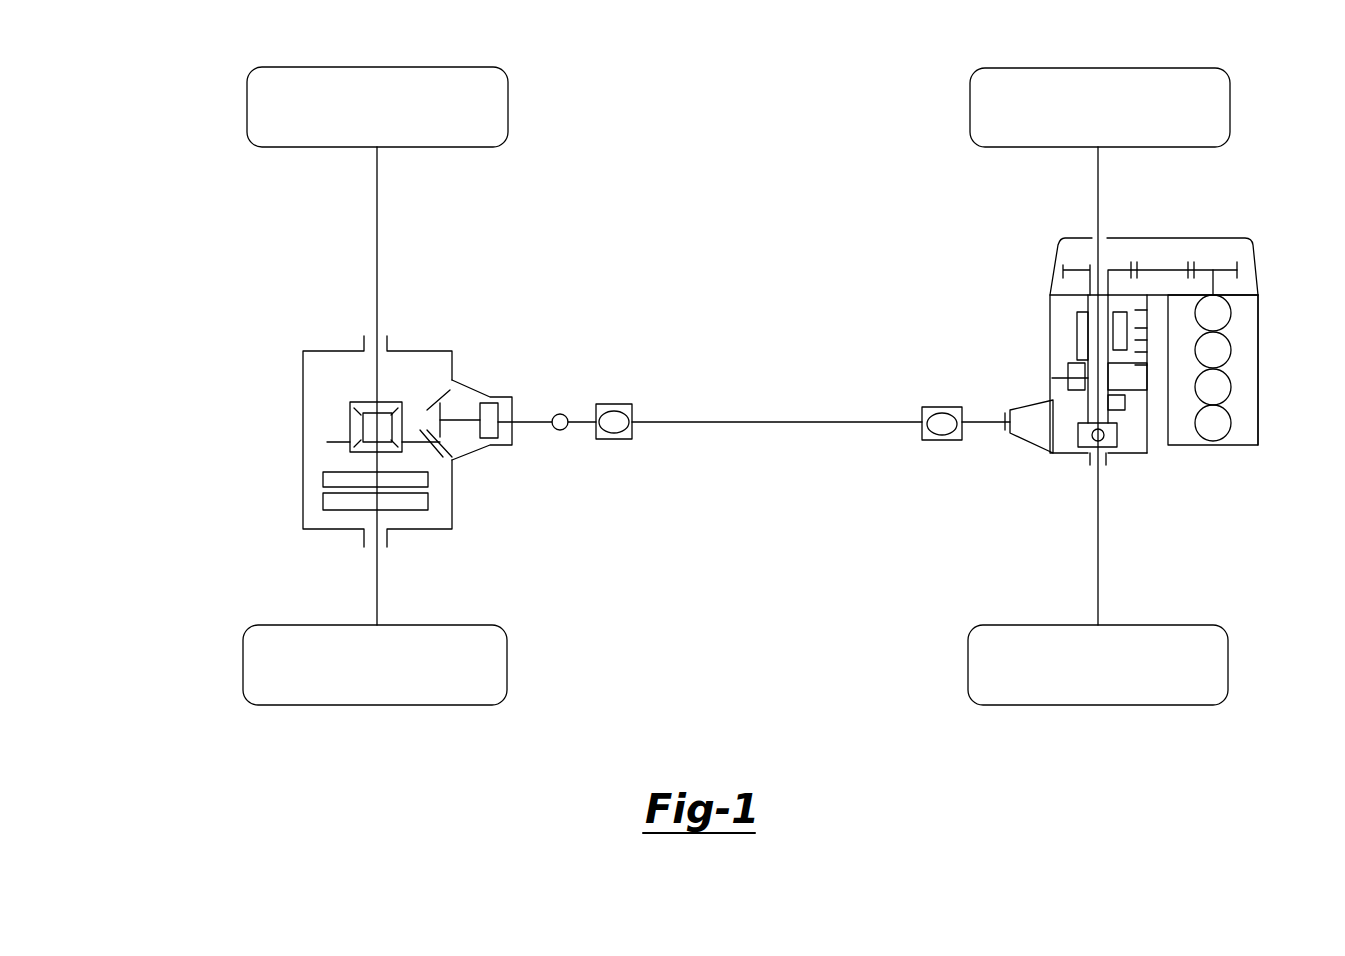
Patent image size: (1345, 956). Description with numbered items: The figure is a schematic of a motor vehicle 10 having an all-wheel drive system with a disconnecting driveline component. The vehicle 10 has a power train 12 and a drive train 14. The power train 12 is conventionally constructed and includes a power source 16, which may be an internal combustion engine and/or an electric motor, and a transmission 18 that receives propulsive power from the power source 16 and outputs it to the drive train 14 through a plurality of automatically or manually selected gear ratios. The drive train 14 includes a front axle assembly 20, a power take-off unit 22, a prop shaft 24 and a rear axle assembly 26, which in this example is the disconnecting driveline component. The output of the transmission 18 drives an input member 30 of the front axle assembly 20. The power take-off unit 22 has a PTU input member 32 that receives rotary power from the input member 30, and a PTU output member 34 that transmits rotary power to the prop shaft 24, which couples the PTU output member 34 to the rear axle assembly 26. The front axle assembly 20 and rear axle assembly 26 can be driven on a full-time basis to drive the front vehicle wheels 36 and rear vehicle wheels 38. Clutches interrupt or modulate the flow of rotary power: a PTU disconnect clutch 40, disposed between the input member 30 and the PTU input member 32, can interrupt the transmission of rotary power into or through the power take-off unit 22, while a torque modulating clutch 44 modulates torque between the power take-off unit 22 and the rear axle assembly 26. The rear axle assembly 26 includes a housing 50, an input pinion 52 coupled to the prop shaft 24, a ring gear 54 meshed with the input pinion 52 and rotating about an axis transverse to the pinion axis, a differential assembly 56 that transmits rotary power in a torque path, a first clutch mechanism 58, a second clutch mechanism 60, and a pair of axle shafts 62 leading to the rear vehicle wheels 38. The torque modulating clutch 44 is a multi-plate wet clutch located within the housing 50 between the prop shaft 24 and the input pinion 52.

The vehicle 10 is at (190, 745).
The power train 12 is at (1275, 358).
The drive train 14 is at (762, 360).
The power source 16 is at (1240, 436).
The transmission 18 is at (1250, 246).
The front axle assembly 20 is at (1087, 478).
The power take-off unit 22 is at (1027, 447).
The prop shaft 24 is at (663, 422).
The rear axle assembly 26 is at (293, 333).
The input member 30 is at (1090, 280).
The PTU input member 32 is at (1063, 410).
The PTU output member 34 is at (983, 420).
The front vehicle wheels 36 is at (968, 103).
The rear vehicle wheels 38 is at (246, 103).
The PTU disconnect clutch 40 is at (1128, 398).
The torque modulating clutch 44 is at (489, 403).
The housing 50 is at (512, 440).
The input pinion 52 is at (452, 443).
The ring gear 54 is at (327, 440).
The differential assembly 56 is at (347, 408).
The first clutch mechanism 58 is at (445, 487).
The second clutch mechanism 60 is at (308, 508).
The axle shafts 62 is at (378, 180).